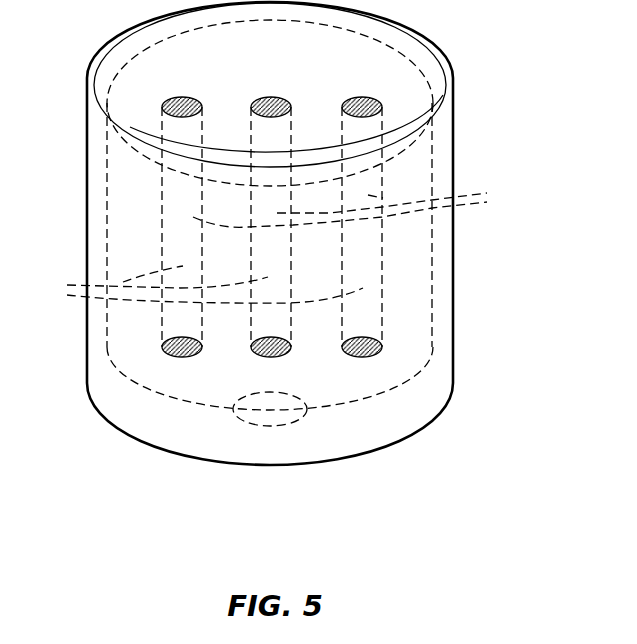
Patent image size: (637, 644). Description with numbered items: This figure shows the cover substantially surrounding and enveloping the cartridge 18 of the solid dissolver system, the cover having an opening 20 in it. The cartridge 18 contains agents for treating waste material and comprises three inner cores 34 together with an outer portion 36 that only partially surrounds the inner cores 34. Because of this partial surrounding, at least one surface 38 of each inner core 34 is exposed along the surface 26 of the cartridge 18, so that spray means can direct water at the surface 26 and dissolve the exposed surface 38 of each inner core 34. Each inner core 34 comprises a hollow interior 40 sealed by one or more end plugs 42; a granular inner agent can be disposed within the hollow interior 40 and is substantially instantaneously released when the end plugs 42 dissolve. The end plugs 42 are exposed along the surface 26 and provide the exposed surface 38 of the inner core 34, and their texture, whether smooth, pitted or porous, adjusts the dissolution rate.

The cartridge 18 is at (433, 268).
The opening 20 is at (253, 426).
The surface 26 is at (440, 413).
The inner core 34 is at (201, 284).
The outer portion 36 is at (155, 72).
The surface of inner core 38 is at (177, 356).
The hollow interior 40 is at (354, 206).
The end plug 42 is at (182, 97).